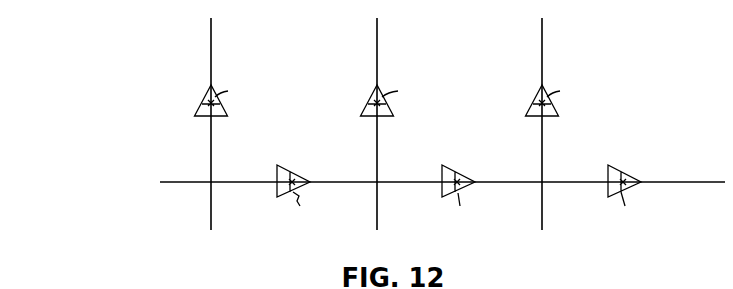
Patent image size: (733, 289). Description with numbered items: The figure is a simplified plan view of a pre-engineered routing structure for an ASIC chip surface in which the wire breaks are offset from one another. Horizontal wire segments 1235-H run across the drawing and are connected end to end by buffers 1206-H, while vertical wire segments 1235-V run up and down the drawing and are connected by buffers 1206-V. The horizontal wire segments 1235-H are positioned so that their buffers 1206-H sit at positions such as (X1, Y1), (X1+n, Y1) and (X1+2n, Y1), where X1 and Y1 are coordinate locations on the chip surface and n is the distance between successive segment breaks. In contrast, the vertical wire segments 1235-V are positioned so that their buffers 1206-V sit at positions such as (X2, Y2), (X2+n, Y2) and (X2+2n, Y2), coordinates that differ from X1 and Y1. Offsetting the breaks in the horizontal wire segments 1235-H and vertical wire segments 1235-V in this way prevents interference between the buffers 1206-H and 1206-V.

The buffers 1206-V is at (202, 101).
The vertical wire segments 1235-V is at (211, 77).
The horizontal wire segments 1235-H is at (505, 181).
The buffers 1206-H is at (277, 196).